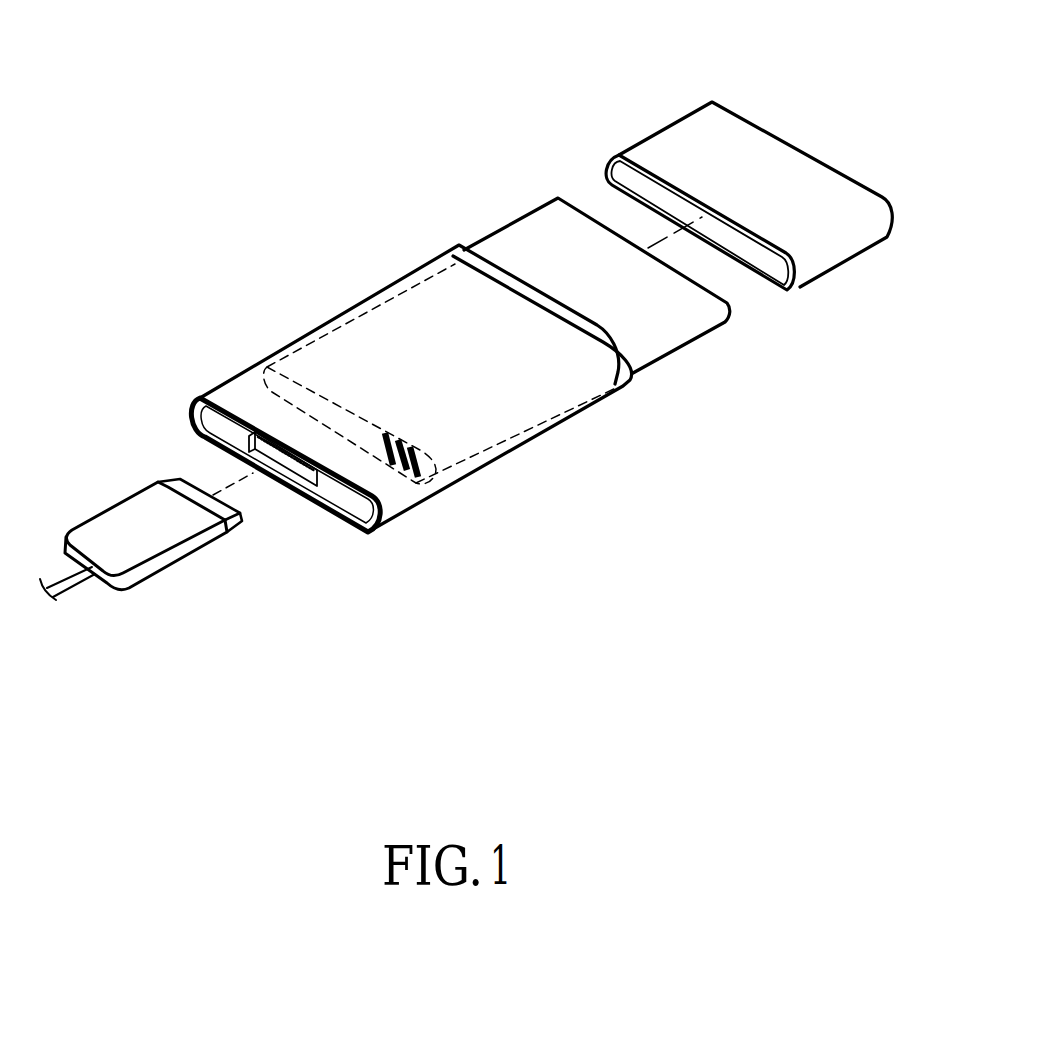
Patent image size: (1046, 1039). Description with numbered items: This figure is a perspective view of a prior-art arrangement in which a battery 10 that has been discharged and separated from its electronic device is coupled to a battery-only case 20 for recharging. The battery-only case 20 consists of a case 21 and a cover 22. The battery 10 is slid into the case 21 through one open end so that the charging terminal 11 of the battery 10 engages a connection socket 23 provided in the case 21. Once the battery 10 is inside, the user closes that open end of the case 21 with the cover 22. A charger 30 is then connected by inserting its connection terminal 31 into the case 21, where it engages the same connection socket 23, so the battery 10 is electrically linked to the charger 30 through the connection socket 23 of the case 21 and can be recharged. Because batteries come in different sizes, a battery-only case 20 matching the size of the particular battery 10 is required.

The battery 10 is at (662, 332).
The charging terminal 11 is at (417, 480).
The battery-only case 20 is at (554, 25).
The case 21 is at (345, 347).
The cover 22 is at (665, 152).
The connection socket 23 is at (226, 457).
The charger 30 is at (115, 523).
The connection terminal 31 is at (183, 488).